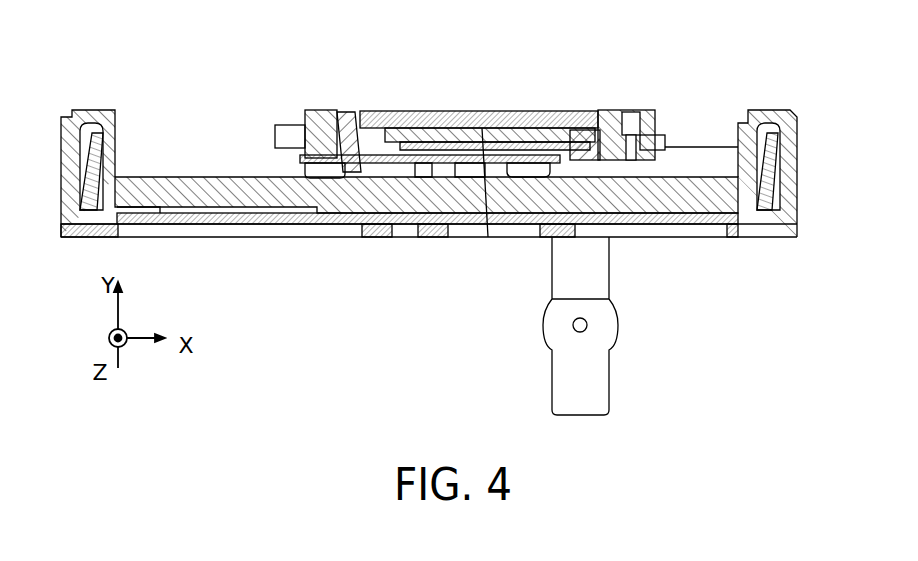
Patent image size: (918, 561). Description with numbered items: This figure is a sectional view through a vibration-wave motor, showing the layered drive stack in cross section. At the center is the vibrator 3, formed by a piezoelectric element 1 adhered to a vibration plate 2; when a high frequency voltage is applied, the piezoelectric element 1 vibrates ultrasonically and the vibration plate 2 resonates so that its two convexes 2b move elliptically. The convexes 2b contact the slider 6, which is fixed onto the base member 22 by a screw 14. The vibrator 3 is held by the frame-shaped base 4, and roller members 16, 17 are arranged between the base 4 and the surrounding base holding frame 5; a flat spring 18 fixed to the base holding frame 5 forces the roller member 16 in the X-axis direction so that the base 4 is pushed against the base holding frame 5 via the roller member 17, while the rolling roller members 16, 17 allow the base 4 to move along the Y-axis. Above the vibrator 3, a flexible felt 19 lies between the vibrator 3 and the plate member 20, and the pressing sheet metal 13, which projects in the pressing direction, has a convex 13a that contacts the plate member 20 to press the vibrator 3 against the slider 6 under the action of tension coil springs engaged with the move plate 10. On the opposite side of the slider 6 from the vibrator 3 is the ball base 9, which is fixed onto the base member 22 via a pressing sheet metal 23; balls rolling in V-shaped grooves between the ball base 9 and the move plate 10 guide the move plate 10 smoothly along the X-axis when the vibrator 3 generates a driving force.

The piezoelectric element 1 is at (413, 162).
The vibration plate 2 is at (447, 156).
The convex 2b is at (484, 127).
The vibrator 3 is at (493, 197).
The base 4 is at (292, 124).
The base holding frame 5 is at (322, 112).
The slider 6 is at (230, 177).
The ball base 9 is at (275, 231).
The move plate 10 is at (468, 238).
The pressing sheet metal 13 is at (382, 111).
The convex 13a is at (488, 237).
The screw 14 is at (746, 209).
The roller member 16 is at (618, 118).
The roller member 17 is at (336, 112).
The flat spring 18 is at (626, 118).
The flexible felt 19 is at (536, 118).
The plate member 20 is at (504, 118).
The base member 22 is at (106, 118).
The pressing sheet metal 23 is at (100, 230).